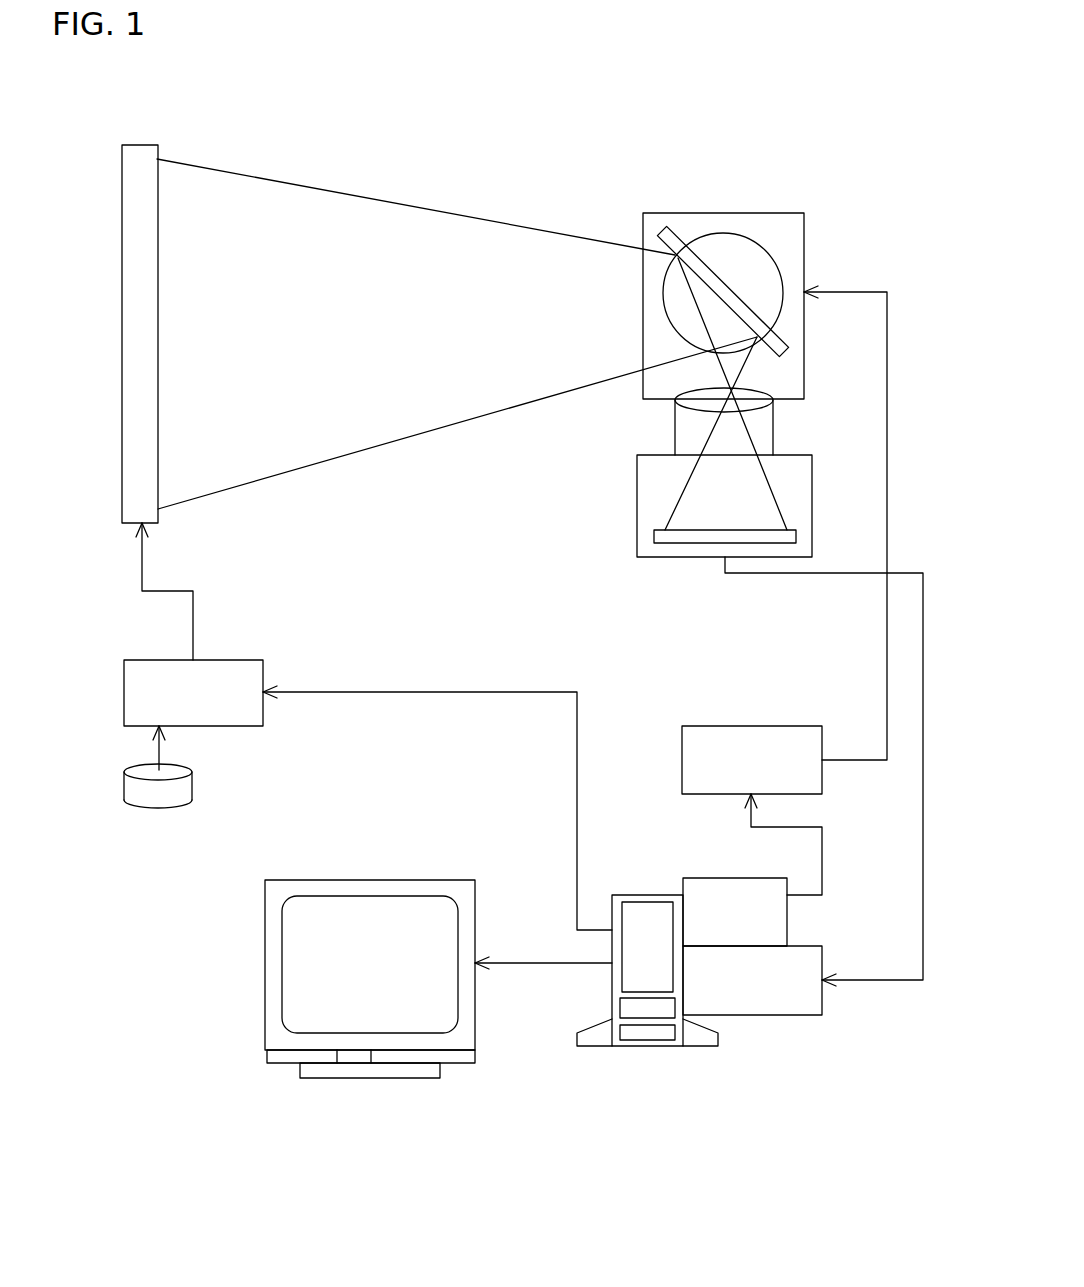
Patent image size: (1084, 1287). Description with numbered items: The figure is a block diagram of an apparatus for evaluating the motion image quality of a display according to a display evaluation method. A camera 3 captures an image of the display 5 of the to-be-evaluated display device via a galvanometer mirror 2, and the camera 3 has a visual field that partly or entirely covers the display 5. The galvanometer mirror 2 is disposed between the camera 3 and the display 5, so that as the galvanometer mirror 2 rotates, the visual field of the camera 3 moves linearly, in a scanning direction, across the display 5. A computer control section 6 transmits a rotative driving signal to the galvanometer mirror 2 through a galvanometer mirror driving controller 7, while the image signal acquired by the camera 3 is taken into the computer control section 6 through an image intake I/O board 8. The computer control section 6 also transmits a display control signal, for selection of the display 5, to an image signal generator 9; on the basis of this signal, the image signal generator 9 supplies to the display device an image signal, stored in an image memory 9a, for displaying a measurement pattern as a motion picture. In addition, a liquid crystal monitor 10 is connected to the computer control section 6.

The galvanometer mirror 2 is at (725, 282).
The camera 3 is at (637, 505).
The display 5 is at (158, 230).
The computer control section 6 is at (612, 983).
The galvanometer mirror driving controller 7 is at (752, 726).
The image intake I/O board 8 is at (775, 1015).
The image signal generator 9 is at (232, 660).
The image memory 9a is at (192, 786).
The liquid crystal monitor 10 is at (265, 962).